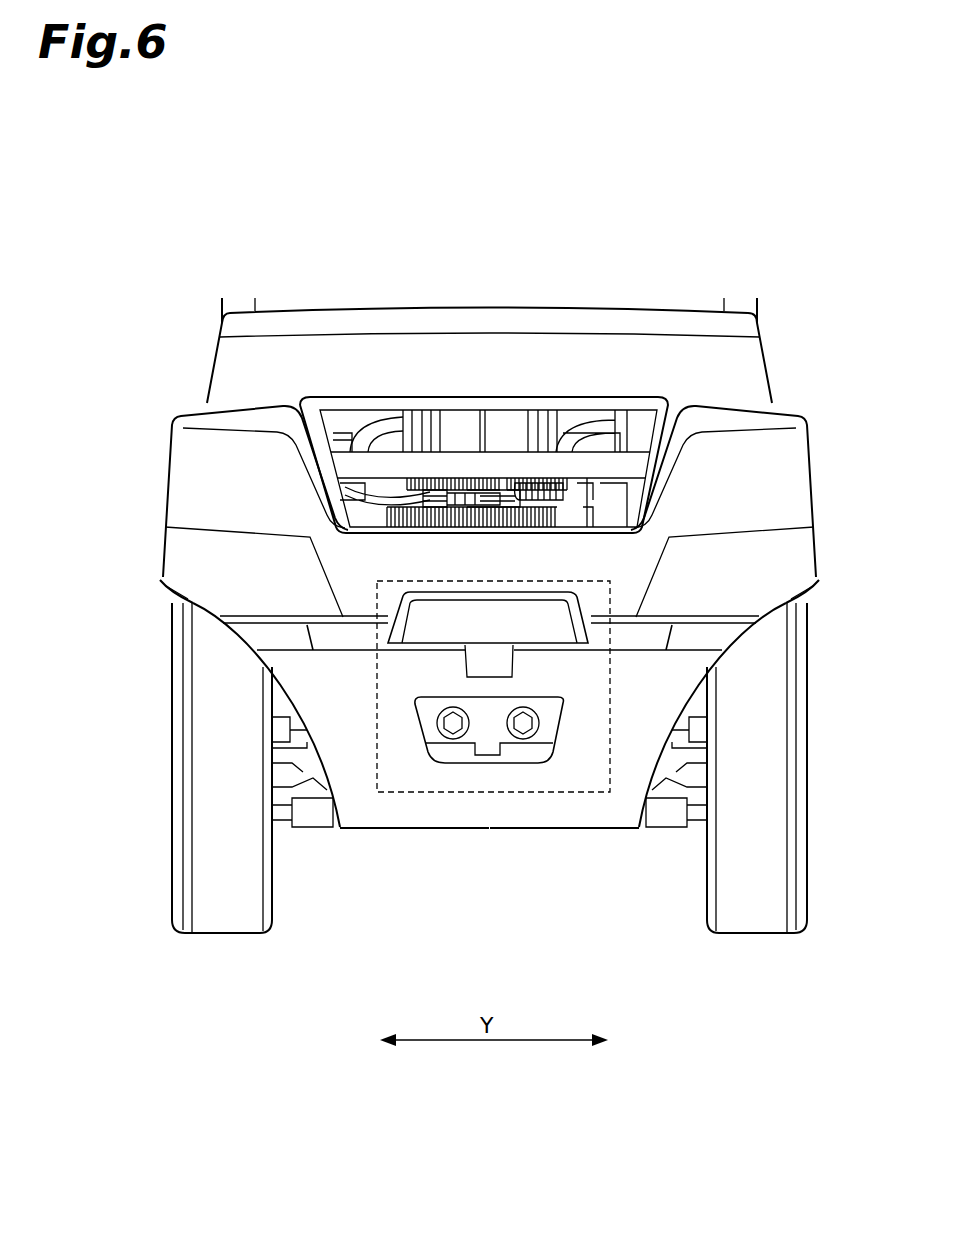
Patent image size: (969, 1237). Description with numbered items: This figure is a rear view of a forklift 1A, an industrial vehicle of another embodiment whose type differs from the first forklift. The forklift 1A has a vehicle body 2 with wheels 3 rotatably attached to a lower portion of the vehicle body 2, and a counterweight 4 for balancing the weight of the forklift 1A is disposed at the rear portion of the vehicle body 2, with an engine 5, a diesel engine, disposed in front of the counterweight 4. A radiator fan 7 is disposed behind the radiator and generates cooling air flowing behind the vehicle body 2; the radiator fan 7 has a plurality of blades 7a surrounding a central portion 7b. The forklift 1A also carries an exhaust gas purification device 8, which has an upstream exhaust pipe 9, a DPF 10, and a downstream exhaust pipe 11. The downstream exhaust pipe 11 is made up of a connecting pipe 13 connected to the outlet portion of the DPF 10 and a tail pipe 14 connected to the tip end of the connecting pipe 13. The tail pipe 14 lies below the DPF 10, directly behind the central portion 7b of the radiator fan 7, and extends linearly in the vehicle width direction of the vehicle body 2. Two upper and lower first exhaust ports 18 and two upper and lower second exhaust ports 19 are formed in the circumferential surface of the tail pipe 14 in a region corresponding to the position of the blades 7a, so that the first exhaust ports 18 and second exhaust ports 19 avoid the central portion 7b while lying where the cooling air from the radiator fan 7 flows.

The forklift 1A is at (326, 176).
The vehicle body 2 is at (621, 300).
The wheels 3 is at (210, 848).
The counterweight 4 is at (412, 363).
The engine 5 is at (535, 792).
The radiator fan 7 is at (450, 480).
The blades 7a is at (383, 510).
The central portion 7b is at (480, 500).
The exhaust gas purification device 8 is at (343, 349).
The upstream exhaust pipe 9 is at (590, 430).
The DPF 10 is at (518, 424).
The downstream exhaust pipe 11 is at (384, 412).
The connecting pipe 13 is at (373, 440).
The tail pipe 14 is at (483, 493).
The first exhaust ports 18 is at (437, 510).
The second exhaust ports 19 is at (540, 507).